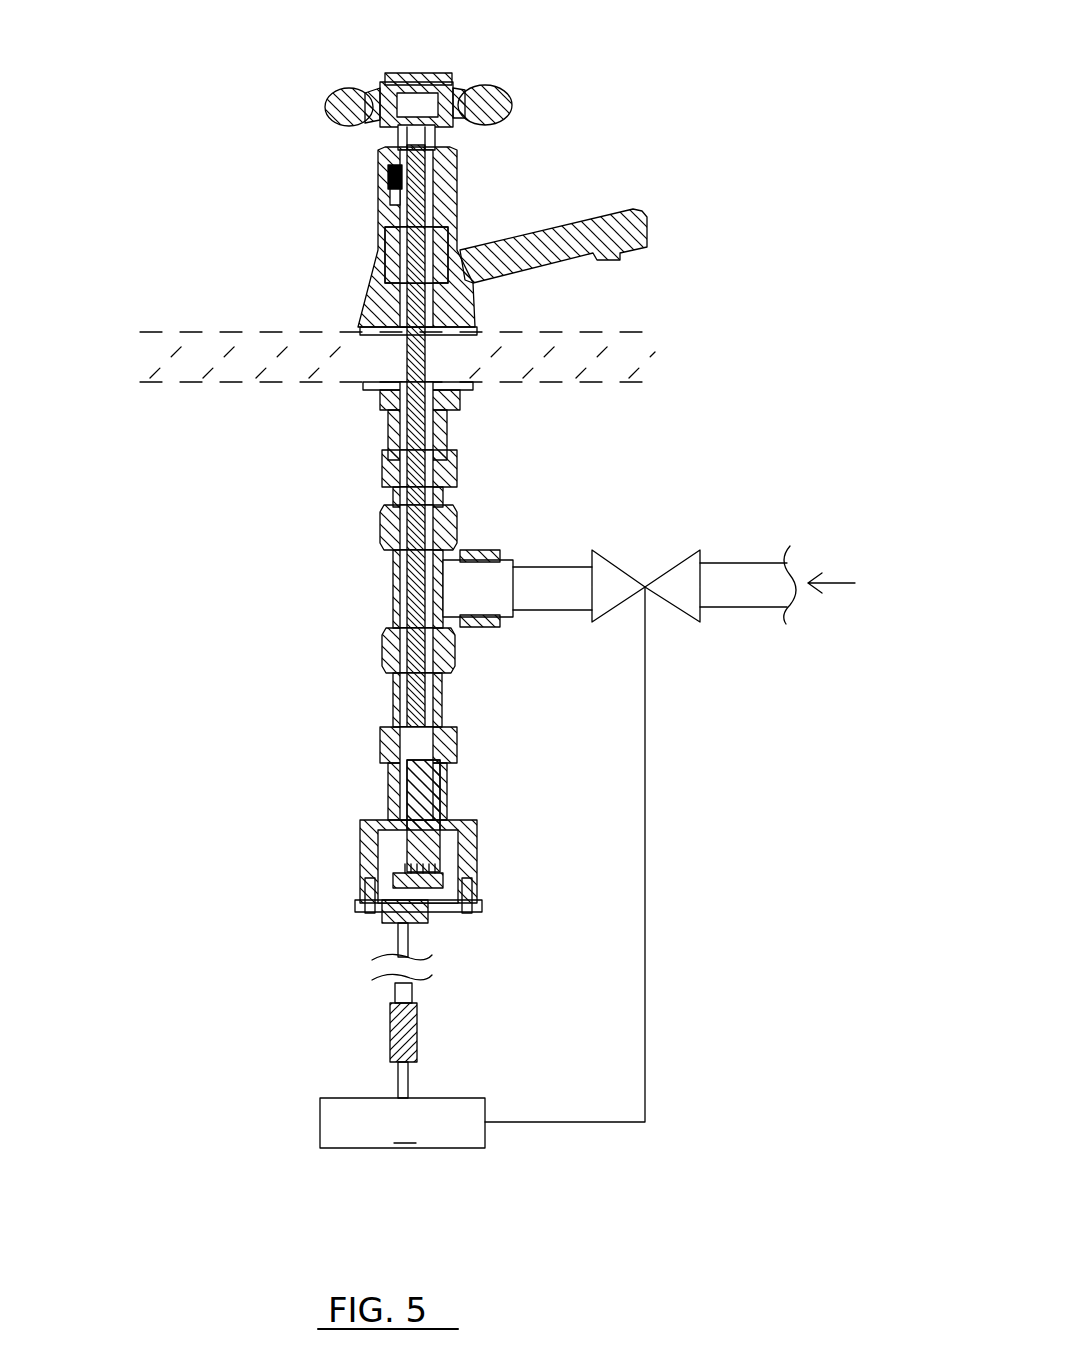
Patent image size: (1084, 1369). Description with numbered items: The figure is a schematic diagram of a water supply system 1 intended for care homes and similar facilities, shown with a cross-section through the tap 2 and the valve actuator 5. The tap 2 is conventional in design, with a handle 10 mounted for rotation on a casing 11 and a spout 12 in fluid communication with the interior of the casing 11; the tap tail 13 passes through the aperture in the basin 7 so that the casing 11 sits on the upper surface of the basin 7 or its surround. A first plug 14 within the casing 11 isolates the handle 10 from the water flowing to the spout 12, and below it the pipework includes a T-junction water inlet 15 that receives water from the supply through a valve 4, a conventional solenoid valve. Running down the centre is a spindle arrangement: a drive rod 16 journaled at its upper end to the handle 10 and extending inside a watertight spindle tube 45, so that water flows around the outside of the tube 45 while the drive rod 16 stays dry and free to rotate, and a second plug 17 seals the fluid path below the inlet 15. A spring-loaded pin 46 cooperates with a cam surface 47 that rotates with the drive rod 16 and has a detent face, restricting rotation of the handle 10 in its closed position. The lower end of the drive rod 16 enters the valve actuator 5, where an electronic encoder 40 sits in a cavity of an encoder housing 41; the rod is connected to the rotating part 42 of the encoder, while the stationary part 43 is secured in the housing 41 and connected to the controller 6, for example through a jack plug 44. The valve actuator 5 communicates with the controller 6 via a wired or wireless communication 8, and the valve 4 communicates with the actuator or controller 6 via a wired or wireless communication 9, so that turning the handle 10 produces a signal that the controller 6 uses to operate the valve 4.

The water supply system 1 is at (712, 45).
The tap 2 is at (411, 206).
The valve 4 is at (646, 540).
The valve actuator 5 is at (388, 828).
The controller 6 is at (402, 1123).
The basin 7 is at (212, 362).
The wired or wireless communication 8 is at (392, 937).
The wired or wireless communication 9 is at (652, 853).
The handle 10 is at (343, 100).
The casing 11 is at (372, 305).
The spout 12 is at (565, 220).
The tap tail 13 is at (456, 430).
The first plug 14 is at (392, 243).
The T-junction water inlet 15 is at (452, 528).
The drive rod 16 is at (417, 540).
The second plug 17 is at (400, 648).
The electronic encoder 40 is at (372, 866).
The encoder housing 41 is at (478, 850).
The rotating part 42 is at (417, 790).
The stationary part 43 is at (400, 880).
The jack plug 44 is at (420, 1060).
The spindle tube 45 is at (410, 443).
The spring-loaded pin 46 is at (385, 160).
The cam surface 47 is at (390, 205).